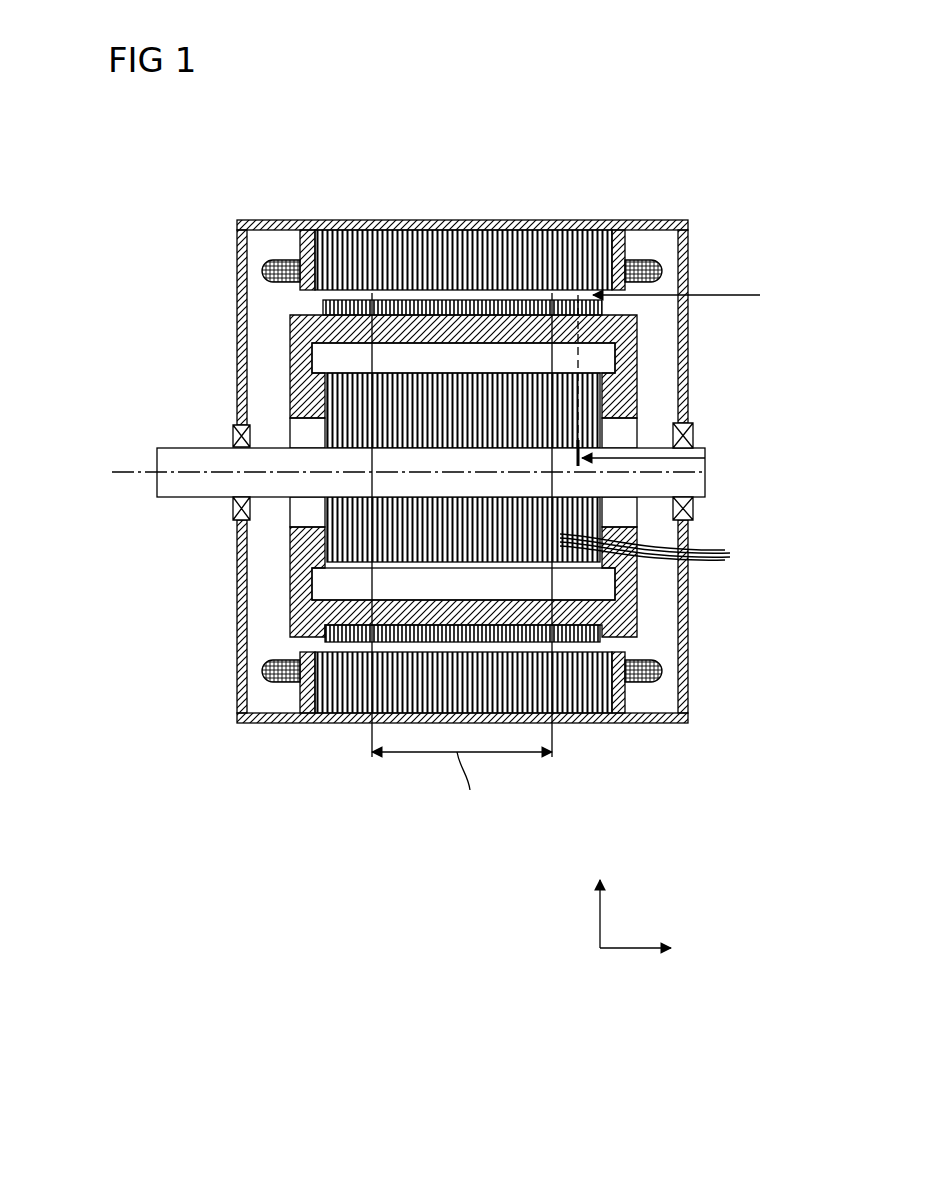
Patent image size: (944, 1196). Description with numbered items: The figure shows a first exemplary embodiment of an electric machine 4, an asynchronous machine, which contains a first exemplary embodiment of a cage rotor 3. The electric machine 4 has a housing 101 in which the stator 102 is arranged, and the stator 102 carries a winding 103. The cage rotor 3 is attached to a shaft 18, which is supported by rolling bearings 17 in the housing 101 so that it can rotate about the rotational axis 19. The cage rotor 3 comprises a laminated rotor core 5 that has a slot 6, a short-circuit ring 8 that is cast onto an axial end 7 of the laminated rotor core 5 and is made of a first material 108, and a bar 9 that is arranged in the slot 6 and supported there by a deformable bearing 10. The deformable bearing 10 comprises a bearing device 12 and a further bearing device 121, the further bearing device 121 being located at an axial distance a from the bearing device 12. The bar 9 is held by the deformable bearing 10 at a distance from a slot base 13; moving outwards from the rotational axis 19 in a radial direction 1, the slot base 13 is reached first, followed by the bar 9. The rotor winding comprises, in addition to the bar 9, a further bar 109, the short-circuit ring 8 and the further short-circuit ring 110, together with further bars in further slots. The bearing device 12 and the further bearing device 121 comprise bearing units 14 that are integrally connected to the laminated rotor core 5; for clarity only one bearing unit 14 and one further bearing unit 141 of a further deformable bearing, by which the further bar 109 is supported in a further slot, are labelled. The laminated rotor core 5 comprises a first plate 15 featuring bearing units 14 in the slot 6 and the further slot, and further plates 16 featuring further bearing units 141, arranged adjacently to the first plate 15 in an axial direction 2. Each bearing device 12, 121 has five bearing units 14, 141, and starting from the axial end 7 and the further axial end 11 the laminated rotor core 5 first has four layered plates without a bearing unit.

The radial direction 1 is at (598, 925).
The axial direction 2 is at (627, 950).
The cage rotor 3 is at (275, 305).
The electric machine 4 is at (692, 125).
The laminated rotor core 5 is at (605, 438).
The slot 6 is at (367, 272).
The axial end 7 is at (327, 292).
The short-circuit ring 8 is at (308, 400).
The bar 9 is at (365, 328).
The deformable bearing 10 is at (280, 385).
The further axial end 11 is at (600, 290).
The bearing device 12 is at (357, 370).
The slot base 13 is at (413, 372).
The bearing unit 14 is at (638, 568).
The first plate 15 is at (590, 510).
The further plate 16 is at (660, 550).
The rolling bearing 17 is at (233, 507).
The shaft 18 is at (155, 487).
The rotational axis 19 is at (123, 470).
The housing 101 is at (258, 225).
The stator 102 is at (263, 690).
The winding 103 is at (278, 683).
The first material 108 is at (482, 360).
The further bar 109 is at (315, 588).
The further short-circuit ring 110 is at (640, 625).
The further bearing device 121 is at (568, 356).
The further bearing unit 141 is at (572, 568).